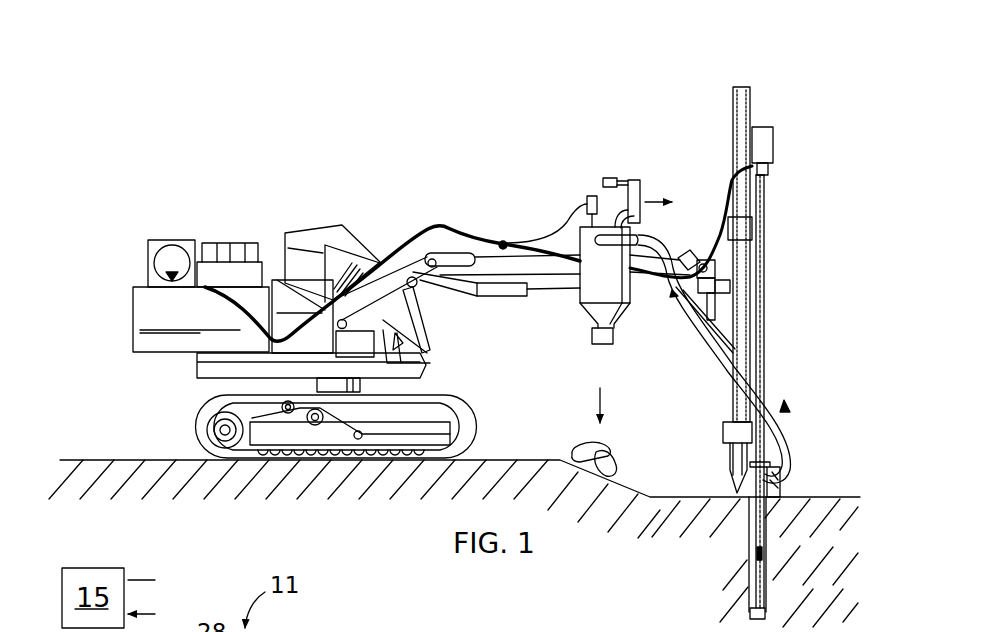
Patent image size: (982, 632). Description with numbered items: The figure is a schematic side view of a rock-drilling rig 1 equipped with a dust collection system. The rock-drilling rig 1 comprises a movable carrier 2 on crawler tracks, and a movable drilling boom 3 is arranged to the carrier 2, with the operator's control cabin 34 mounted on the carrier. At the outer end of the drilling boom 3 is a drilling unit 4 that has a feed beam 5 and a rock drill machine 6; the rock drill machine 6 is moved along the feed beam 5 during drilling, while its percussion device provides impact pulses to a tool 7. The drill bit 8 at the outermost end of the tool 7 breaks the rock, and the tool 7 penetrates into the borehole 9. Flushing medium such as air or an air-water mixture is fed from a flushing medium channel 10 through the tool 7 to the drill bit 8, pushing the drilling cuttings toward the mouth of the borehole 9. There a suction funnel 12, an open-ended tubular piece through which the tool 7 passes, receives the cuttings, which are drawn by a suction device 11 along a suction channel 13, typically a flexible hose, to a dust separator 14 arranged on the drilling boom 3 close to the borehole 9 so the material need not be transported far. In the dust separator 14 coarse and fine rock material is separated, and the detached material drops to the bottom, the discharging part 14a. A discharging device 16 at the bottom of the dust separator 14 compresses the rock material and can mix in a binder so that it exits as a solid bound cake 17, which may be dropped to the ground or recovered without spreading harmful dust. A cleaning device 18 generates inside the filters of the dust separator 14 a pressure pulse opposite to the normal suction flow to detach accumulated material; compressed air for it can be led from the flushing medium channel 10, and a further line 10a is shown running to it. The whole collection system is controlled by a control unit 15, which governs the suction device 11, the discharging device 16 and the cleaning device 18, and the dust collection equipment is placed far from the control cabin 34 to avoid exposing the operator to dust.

The rock-drilling rig 1 is at (232, 180).
The movable carrier 2 is at (410, 404).
The drilling boom 3 is at (488, 267).
The drilling unit 4 is at (779, 95).
The feed beam 5 is at (735, 382).
The rock drill machine 6 is at (762, 158).
The tool 7 is at (768, 323).
The drill bit 8 is at (750, 617).
The borehole 9 is at (743, 543).
The flushing medium channel 10 is at (425, 230).
The control line 10a is at (540, 236).
The suction device 11 is at (627, 170).
The suction funnel 12 is at (778, 468).
The suction channel 13 is at (779, 398).
The dust separator 14 is at (546, 319).
The discharging part 14a is at (618, 315).
The control unit 15 is at (368, 354).
The discharging device 16 is at (592, 334).
The cake 17 is at (613, 463).
The cleaning device 18 is at (586, 196).
The control cabin 34 is at (338, 250).